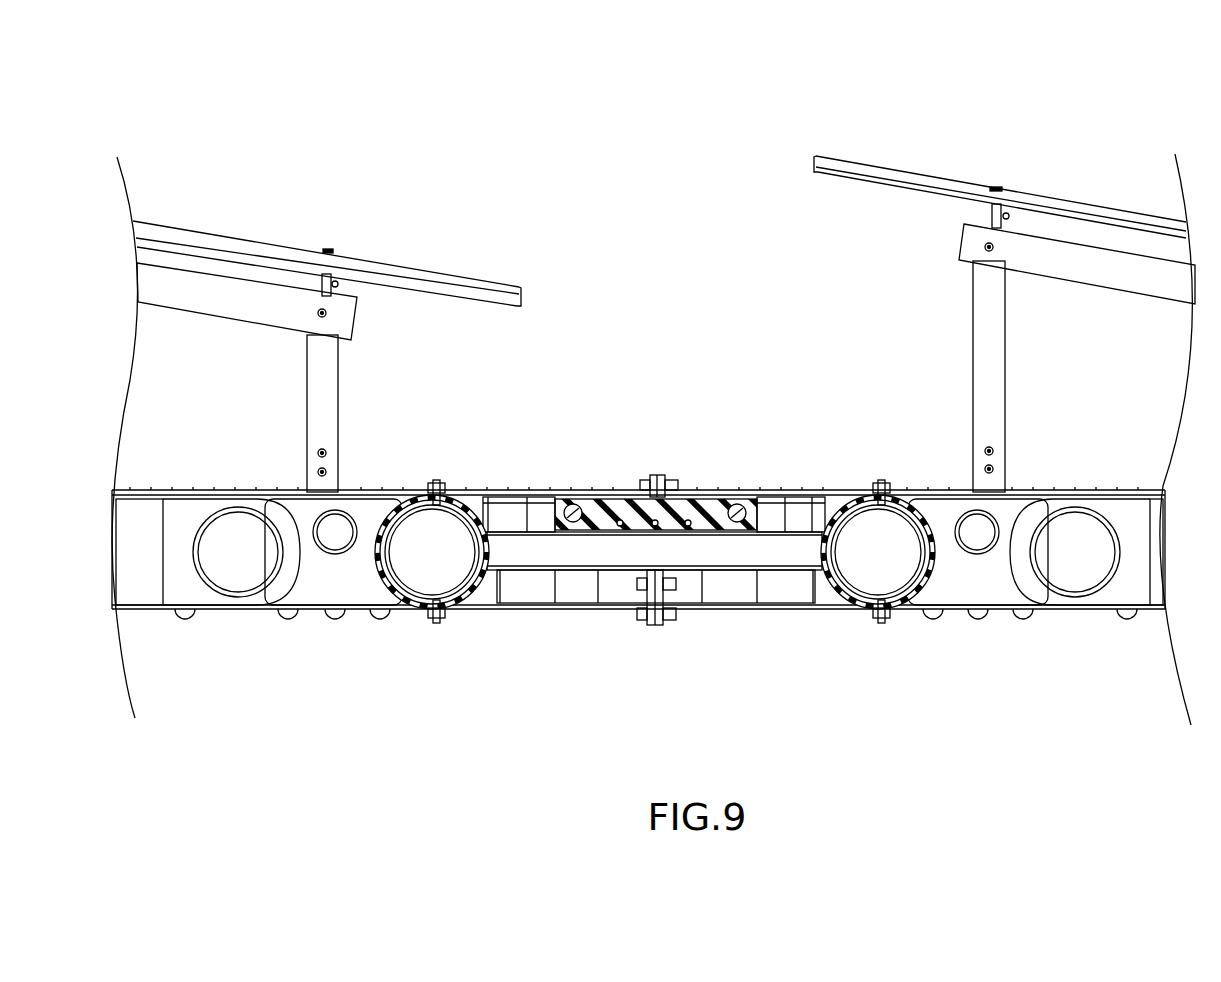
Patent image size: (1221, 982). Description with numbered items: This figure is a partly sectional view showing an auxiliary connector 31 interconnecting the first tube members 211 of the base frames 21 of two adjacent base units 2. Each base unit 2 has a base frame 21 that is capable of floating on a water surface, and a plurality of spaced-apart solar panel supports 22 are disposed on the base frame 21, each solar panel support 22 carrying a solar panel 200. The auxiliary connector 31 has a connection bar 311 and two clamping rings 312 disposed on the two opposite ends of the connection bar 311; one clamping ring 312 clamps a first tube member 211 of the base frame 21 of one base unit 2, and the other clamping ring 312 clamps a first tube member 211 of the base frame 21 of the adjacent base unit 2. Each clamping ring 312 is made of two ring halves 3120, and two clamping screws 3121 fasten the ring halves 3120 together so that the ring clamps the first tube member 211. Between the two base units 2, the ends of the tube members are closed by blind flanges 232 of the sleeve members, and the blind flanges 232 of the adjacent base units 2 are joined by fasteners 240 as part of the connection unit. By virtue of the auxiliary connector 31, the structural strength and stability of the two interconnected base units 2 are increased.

The base unit 2 is at (664, 274).
The solar panel 200 is at (308, 252).
The base frame 21 is at (665, 636).
The first tube member 211 is at (478, 592).
The solar panel support 22 is at (307, 620).
The auxiliary connector 31 is at (669, 536).
The connection bar 311 is at (598, 573).
The clamping ring 312 is at (669, 551).
The ring half 3120 is at (856, 486).
The clamping screw 3121 is at (878, 480).
The blind flange 232 is at (640, 462).
The fastener 240 is at (682, 483).